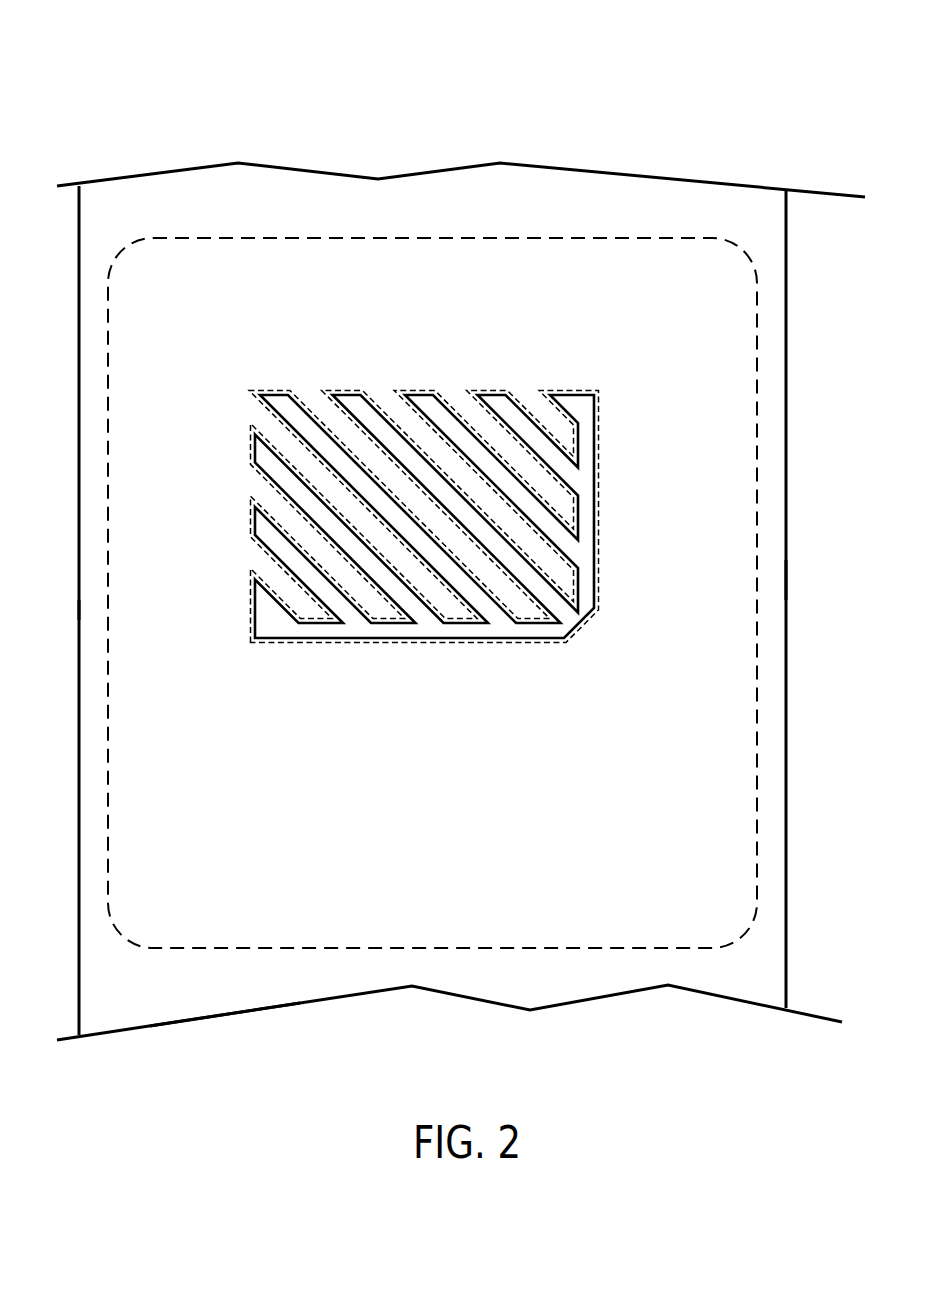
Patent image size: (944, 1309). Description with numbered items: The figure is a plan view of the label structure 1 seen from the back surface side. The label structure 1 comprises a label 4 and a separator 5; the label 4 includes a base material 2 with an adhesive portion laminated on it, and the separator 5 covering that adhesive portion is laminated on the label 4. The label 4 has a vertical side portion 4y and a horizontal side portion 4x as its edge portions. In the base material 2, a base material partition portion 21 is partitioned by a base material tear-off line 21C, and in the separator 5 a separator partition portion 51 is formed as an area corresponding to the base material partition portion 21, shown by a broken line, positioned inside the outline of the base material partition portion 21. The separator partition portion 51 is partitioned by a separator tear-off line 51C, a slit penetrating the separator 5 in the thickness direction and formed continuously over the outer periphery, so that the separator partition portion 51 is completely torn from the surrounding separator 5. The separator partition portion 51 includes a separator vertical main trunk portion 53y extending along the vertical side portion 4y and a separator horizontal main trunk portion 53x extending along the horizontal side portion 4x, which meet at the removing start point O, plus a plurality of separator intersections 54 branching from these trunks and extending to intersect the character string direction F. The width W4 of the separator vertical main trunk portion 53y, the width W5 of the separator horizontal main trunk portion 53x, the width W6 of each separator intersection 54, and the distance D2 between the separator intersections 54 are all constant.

The label structure 1 is at (559, 113).
The base material 2 is at (757, 330).
The label 4 is at (469, 444).
The horizontal side portion 4x is at (284, 948).
The vertical side portion 4y is at (757, 483).
The separator 5 is at (731, 237).
The base material partition portion 21 is at (423, 457).
The base material tear-off line 21C is at (428, 390).
The separator partition portion 51 is at (545, 405).
The separator tear-off line 51C is at (568, 397).
The separator horizontal main trunk portion 53x is at (383, 630).
The separator vertical main trunk portion 53y is at (585, 467).
The separator intersection 54 is at (273, 395).
The width of the separator vertical main trunk portion W4 is at (578, 508).
The width of the separator horizontal main trunk portion W5 is at (473, 623).
The width of the separator intersection W6 is at (531, 559).
The distance between the separator intersections D2 is at (498, 558).
The removing start point O is at (587, 626).
The character string direction F is at (512, 698).